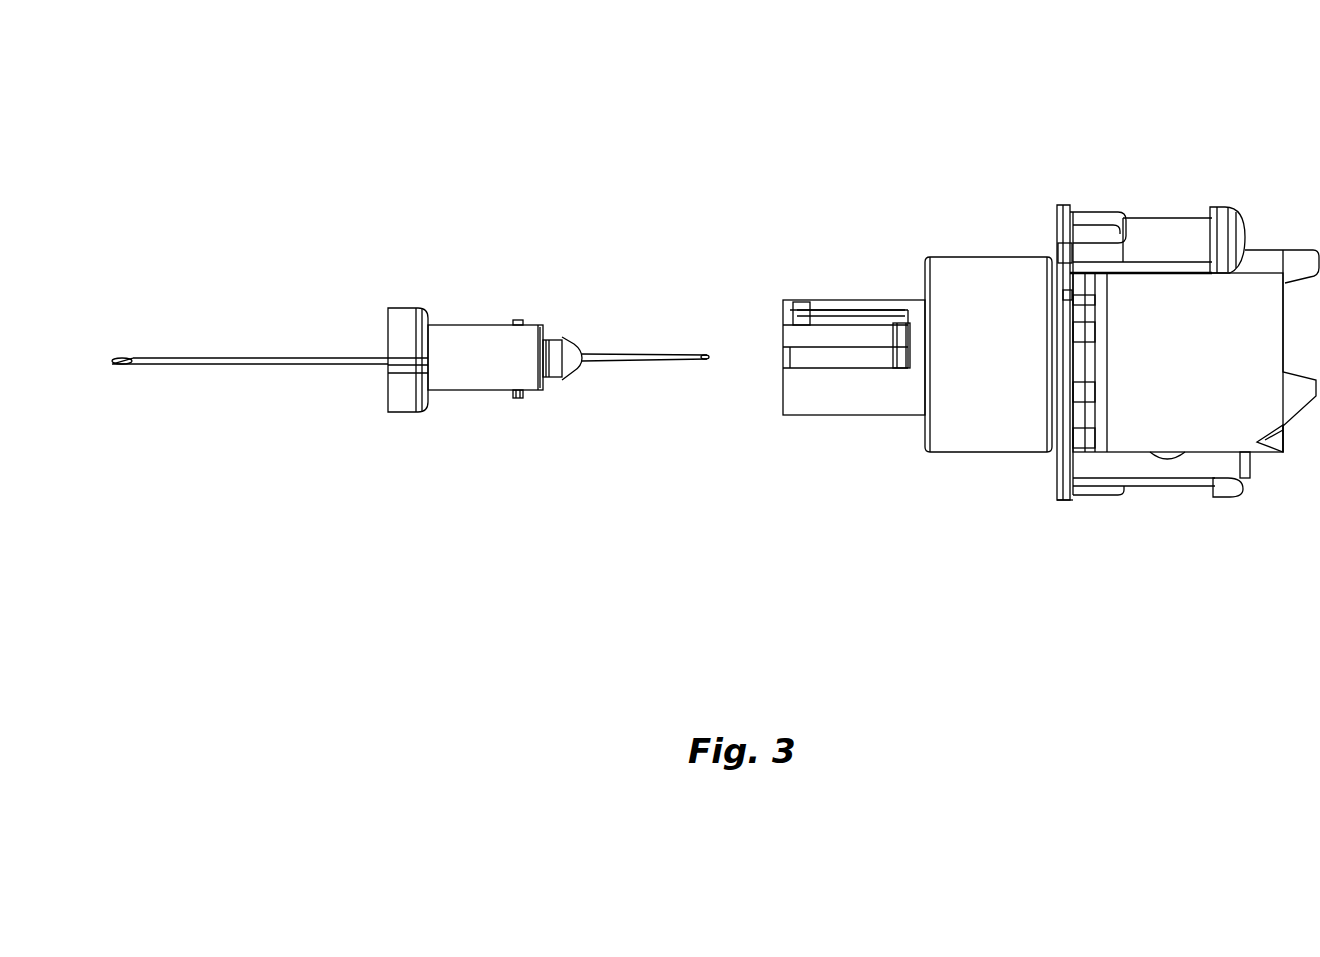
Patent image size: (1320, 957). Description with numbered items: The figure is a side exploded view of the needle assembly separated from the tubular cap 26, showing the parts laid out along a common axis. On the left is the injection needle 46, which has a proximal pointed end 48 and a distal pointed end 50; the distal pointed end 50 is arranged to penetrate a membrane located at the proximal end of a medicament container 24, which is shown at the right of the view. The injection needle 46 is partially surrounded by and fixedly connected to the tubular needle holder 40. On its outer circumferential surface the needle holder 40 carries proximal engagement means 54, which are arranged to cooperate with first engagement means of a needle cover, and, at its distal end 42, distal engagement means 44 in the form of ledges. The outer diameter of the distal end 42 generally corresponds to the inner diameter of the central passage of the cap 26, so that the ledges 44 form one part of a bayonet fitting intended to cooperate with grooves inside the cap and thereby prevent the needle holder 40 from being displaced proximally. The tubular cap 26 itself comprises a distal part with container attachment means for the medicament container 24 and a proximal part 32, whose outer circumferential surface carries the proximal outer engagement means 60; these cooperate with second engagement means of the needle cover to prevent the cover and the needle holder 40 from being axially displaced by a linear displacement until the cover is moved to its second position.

The medicament container 24 is at (1165, 380).
The tubular cap 26 is at (973, 158).
The proximal part 32 is at (862, 415).
The tubular needle holder 40 is at (418, 253).
The distal end of the needle holder 42 is at (495, 342).
The distal engagement means 44 is at (518, 387).
The injection needle 46 is at (259, 360).
The proximal pointed end 48 is at (125, 365).
The distal pointed end 50 is at (707, 355).
The proximal engagement means 54 is at (405, 365).
The proximal outer engagement means 60 is at (850, 363).